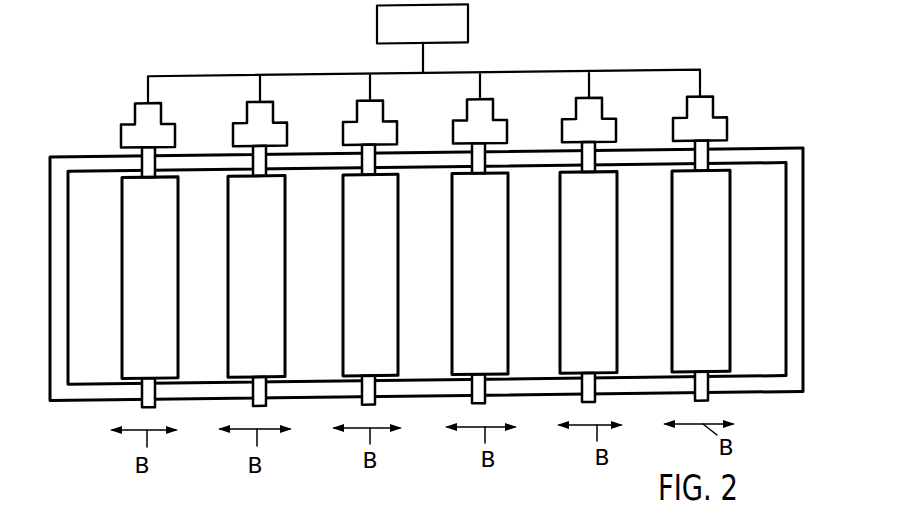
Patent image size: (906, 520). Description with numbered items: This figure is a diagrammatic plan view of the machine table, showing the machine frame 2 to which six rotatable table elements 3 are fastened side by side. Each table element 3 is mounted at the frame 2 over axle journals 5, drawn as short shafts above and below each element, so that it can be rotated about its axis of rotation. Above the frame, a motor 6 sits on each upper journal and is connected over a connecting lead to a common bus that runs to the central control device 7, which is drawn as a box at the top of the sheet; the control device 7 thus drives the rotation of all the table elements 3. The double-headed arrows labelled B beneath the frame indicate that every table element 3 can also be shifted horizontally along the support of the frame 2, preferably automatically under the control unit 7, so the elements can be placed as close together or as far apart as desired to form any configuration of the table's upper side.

The machine frame 2 is at (797, 233).
The table elements 3 is at (508, 232).
The axle journals 5 is at (706, 156).
The motors 6 is at (128, 133).
The central control device 7 is at (462, 30).